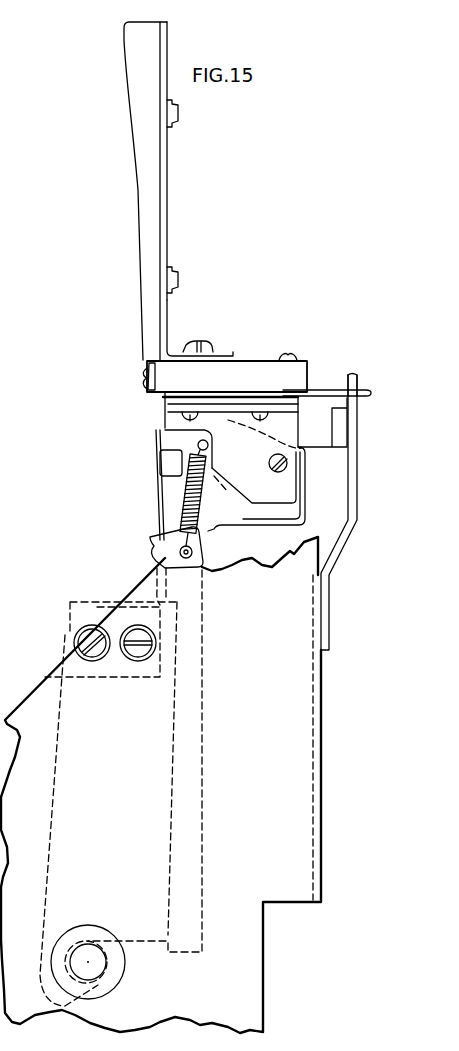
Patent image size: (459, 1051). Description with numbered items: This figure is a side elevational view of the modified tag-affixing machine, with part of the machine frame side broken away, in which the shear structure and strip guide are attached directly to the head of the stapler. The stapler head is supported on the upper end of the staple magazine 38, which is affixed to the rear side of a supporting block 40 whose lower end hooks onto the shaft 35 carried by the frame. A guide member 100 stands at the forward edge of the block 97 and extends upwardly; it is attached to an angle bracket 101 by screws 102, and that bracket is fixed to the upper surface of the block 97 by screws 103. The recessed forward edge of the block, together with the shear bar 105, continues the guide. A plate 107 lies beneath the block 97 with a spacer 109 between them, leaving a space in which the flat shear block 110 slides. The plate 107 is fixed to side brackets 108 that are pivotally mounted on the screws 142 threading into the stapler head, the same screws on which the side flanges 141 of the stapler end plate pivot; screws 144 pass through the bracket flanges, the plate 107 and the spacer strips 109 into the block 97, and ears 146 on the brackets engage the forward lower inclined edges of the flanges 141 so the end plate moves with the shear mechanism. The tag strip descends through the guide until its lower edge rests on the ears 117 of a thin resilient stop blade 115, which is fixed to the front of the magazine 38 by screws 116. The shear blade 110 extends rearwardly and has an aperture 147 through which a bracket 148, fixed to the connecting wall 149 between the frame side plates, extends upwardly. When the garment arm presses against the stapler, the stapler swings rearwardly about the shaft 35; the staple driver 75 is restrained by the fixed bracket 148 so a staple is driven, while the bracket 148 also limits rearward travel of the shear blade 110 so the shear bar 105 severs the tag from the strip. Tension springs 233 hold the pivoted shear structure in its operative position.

The guide member 100 is at (138, 203).
The angle bracket 101 is at (170, 310).
The screws 102 is at (180, 113).
The screws 103 is at (205, 343).
The shear bar 105 is at (143, 370).
The plate 107 is at (165, 400).
The block 97 is at (233, 383).
The spacer 109 is at (260, 393).
The shear block 110 is at (310, 390).
The aperture 147 is at (341, 392).
The staple driver 75 is at (343, 428).
The screws 144 is at (178, 421).
The side flanges 141 is at (265, 430).
The ears 117 is at (162, 460).
The screws 142 is at (269, 463).
The side brackets 108 is at (290, 480).
The blade 115 is at (157, 500).
The ears 146 is at (218, 486).
The screws 116 is at (150, 540).
The tension springs 233 is at (207, 531).
The bracket 148 is at (340, 548).
The supporting block 40 is at (72, 610).
The staple magazine 38 is at (197, 722).
The connecting wall 149 is at (322, 684).
The shaft 35 is at (100, 966).